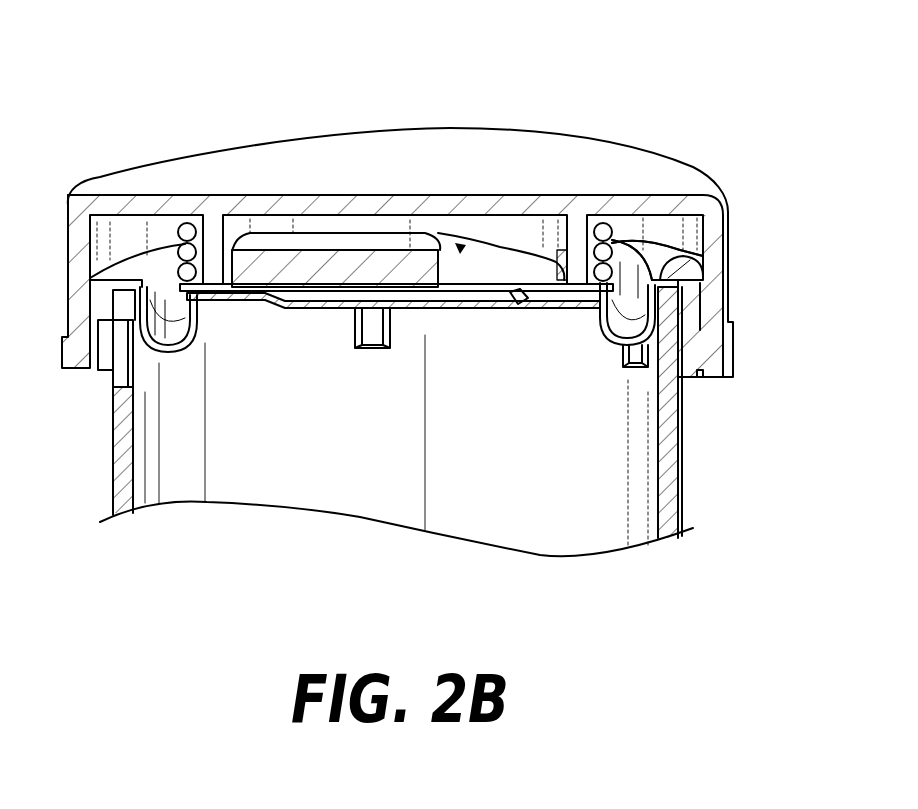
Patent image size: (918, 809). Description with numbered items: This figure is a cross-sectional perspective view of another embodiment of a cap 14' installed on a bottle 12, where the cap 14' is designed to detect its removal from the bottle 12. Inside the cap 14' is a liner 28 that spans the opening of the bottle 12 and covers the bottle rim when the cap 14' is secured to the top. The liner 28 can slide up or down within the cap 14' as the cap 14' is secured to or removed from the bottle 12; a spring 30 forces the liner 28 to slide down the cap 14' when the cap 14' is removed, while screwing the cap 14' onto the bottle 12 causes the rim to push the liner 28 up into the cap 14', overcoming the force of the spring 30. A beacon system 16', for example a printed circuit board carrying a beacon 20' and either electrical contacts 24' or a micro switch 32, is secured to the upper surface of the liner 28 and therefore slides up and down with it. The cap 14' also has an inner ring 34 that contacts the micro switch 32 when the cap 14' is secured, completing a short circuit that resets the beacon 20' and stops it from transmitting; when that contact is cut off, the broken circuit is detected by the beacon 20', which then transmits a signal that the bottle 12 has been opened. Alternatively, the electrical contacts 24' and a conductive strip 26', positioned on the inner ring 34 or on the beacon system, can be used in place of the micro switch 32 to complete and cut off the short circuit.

The bottle 12 is at (670, 427).
The cap 14' is at (397, 203).
The beacon system 16' is at (414, 215).
The beacon 20' is at (336, 175).
The electrical contacts 24' is at (661, 223).
The micro switch 32 is at (657, 260).
The conductive strip 26' is at (611, 181).
The liner 28 is at (675, 273).
The spring 30 is at (213, 243).
The inner ring 34 is at (182, 233).